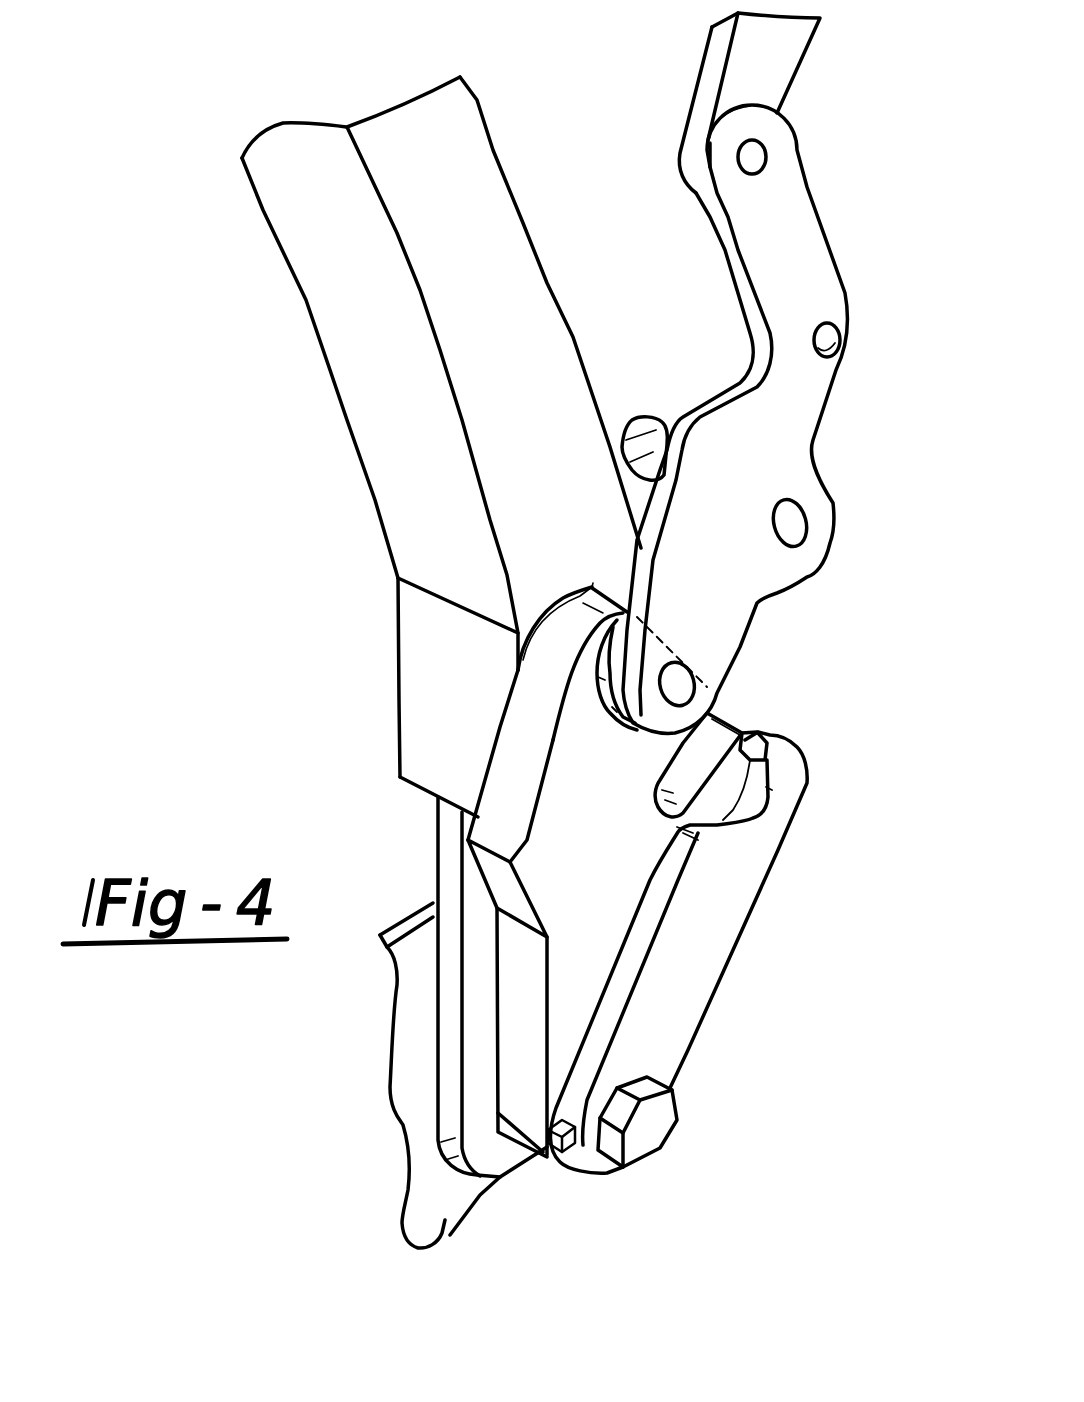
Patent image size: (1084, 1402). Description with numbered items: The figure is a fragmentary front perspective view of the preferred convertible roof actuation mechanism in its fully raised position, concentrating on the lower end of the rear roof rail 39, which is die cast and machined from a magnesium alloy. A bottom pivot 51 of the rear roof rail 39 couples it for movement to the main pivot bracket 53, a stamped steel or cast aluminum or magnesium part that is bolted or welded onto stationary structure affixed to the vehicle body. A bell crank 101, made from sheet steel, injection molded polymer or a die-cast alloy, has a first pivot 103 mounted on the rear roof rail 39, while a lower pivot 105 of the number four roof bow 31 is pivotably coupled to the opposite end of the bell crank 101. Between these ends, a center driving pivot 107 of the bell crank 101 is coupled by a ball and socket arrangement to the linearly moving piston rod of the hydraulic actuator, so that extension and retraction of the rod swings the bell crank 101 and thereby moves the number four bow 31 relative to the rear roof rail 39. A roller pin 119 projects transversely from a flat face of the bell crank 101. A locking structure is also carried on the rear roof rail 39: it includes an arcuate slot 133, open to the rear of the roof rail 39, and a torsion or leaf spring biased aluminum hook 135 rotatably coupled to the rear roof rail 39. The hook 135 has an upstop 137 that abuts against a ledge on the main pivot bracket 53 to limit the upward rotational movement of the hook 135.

The number four roof bow 31 is at (768, 53).
The rear roof rail 39 is at (300, 235).
The bottom pivot 51 is at (657, 1118).
The main pivot bracket 53 is at (433, 1245).
The bell crank 101 is at (733, 257).
The first pivot 103 is at (690, 684).
The lower pivot 105 is at (755, 157).
The center driving pivot 107 is at (827, 340).
The roller pin 119 is at (657, 432).
The arcuate slot 133 is at (720, 733).
The hook 135 is at (733, 887).
The upstop 137 is at (540, 1157).